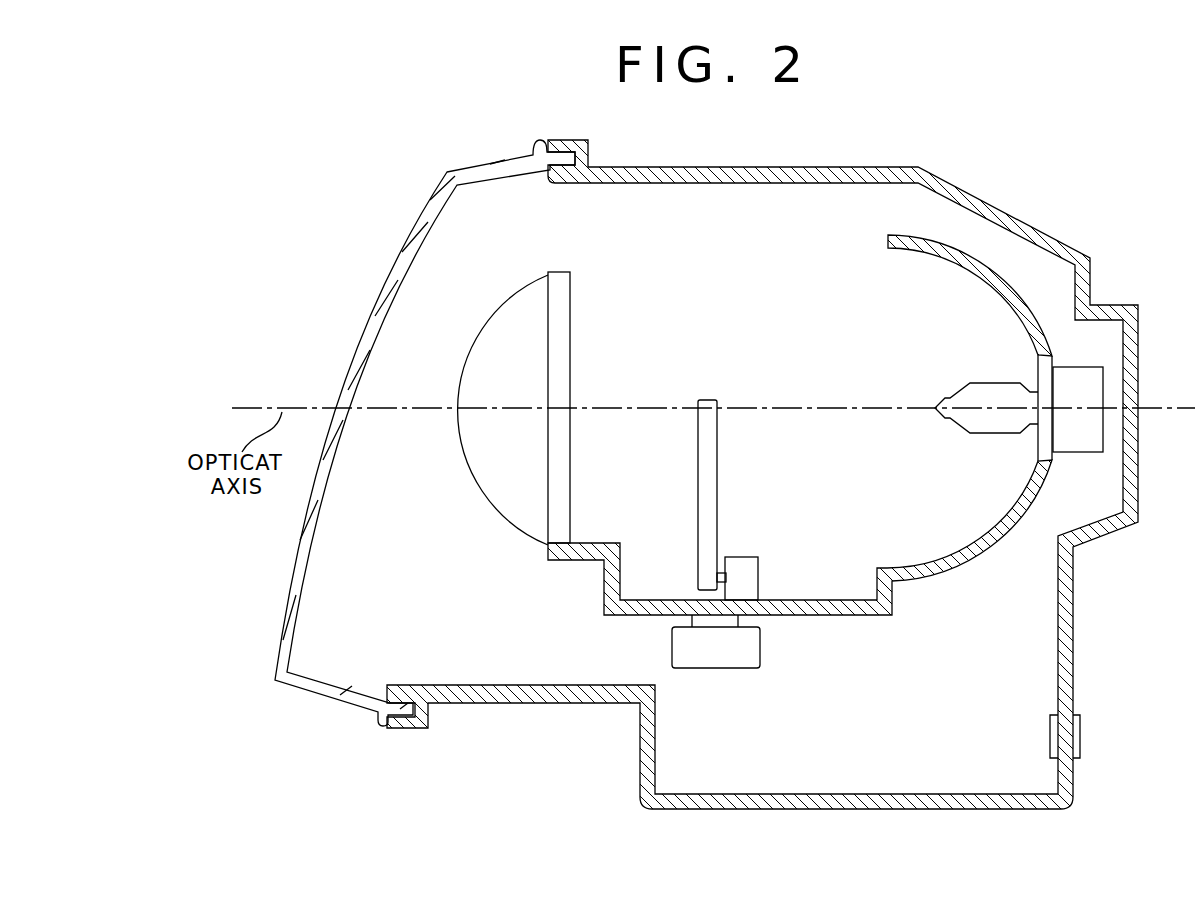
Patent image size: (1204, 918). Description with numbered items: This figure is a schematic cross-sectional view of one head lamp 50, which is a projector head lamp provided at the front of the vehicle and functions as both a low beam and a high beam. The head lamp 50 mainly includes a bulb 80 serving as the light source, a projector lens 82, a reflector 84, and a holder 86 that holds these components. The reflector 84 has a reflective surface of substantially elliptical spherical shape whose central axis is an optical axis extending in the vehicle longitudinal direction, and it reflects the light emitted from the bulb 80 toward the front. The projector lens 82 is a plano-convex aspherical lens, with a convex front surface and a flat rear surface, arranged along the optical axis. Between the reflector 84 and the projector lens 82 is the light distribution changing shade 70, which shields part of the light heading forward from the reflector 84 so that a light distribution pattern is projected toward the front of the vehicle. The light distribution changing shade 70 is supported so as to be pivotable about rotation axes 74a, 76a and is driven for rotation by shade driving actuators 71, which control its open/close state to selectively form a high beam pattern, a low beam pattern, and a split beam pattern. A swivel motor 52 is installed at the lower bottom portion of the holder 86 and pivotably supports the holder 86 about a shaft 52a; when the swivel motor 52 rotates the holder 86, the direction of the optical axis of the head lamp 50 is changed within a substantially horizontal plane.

The head lamp 50 is at (843, 852).
The swivel motor 52 is at (715, 672).
The shaft 52a is at (740, 618).
The light distribution changing shade 70 is at (708, 398).
The shade driving actuator 71 is at (760, 578).
The rotation axis 74a is at (770, 540).
The rotation axis 76a is at (720, 563).
The bulb 80 is at (993, 382).
The projector lens 82 is at (513, 308).
The reflector 84 is at (800, 451).
The holder 86 is at (640, 617).